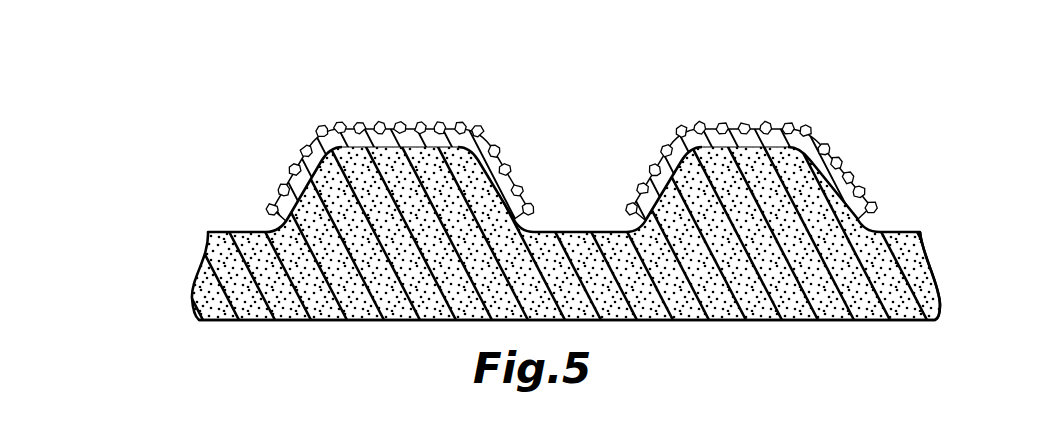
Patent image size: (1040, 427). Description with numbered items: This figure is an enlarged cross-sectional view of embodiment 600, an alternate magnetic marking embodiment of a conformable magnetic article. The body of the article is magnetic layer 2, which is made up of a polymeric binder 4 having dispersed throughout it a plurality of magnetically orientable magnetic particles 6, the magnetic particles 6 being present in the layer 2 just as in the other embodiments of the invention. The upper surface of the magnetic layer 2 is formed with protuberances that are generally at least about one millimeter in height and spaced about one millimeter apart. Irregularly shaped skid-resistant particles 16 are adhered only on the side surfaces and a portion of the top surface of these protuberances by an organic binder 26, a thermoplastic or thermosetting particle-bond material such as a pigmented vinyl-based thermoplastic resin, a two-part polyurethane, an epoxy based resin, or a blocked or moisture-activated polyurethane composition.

The magnetic layer 2 is at (192, 307).
The polymeric binder layer 4 is at (940, 303).
The magnetic particles 6 is at (910, 262).
The skid-resistant particles 16 is at (362, 128).
The organic binder 26 is at (323, 148).
The embodiment 600 is at (893, 112).